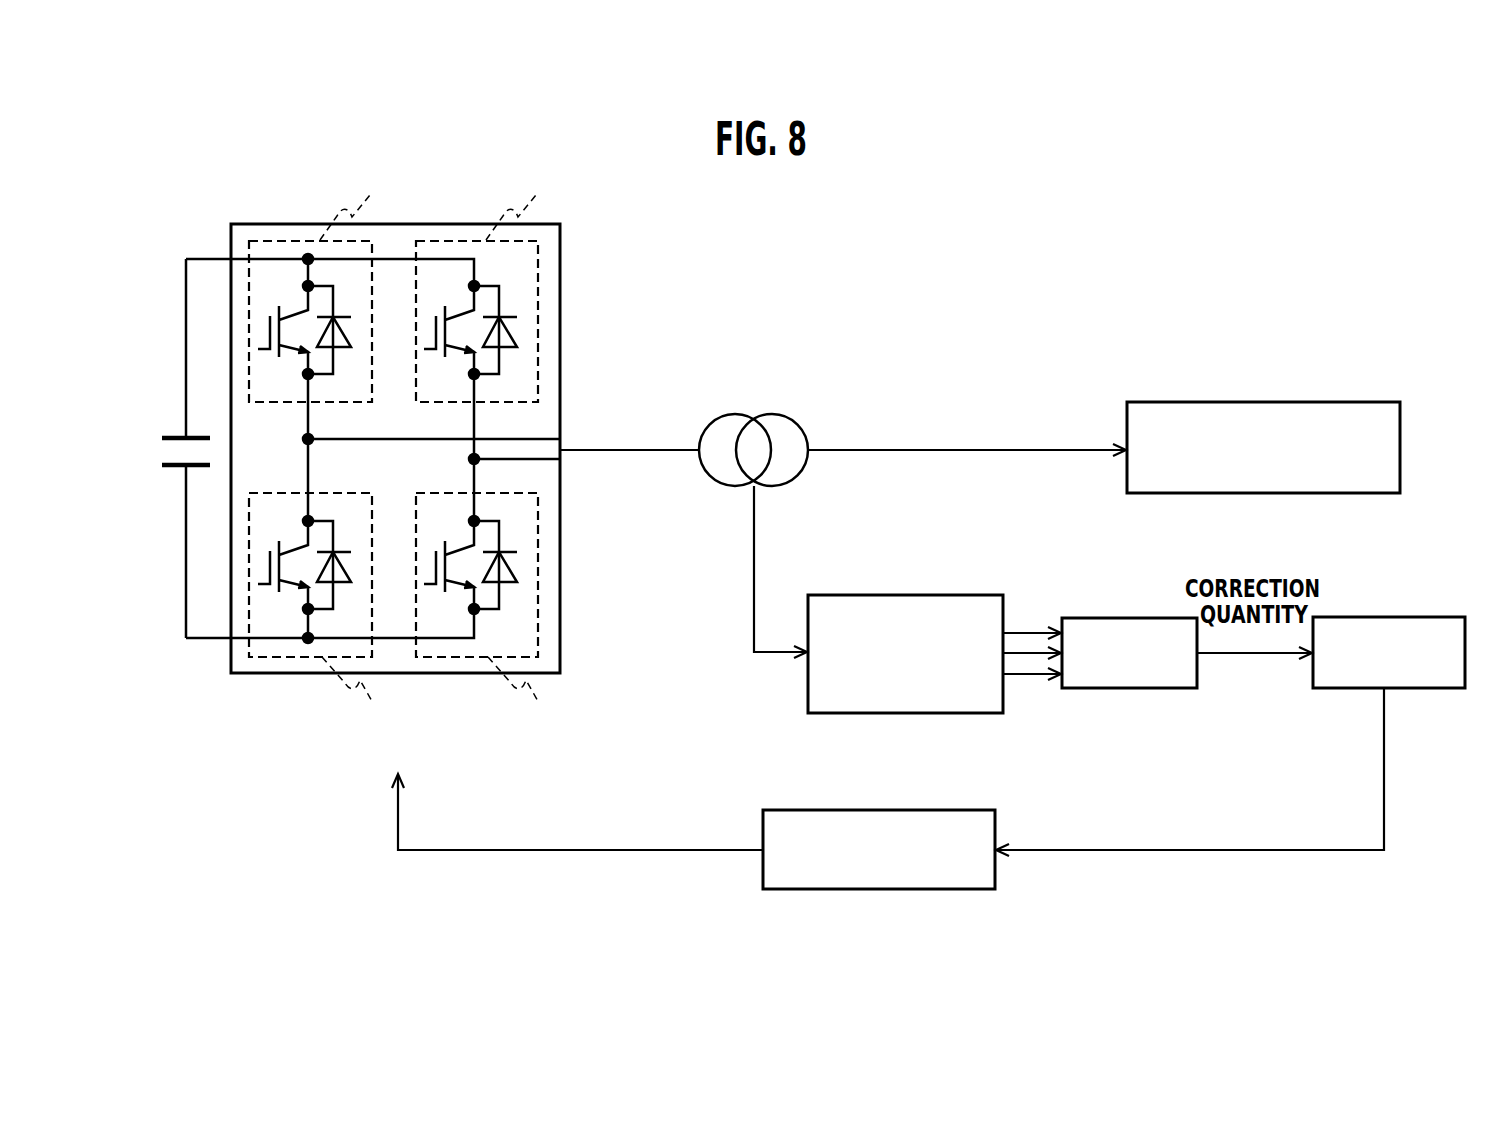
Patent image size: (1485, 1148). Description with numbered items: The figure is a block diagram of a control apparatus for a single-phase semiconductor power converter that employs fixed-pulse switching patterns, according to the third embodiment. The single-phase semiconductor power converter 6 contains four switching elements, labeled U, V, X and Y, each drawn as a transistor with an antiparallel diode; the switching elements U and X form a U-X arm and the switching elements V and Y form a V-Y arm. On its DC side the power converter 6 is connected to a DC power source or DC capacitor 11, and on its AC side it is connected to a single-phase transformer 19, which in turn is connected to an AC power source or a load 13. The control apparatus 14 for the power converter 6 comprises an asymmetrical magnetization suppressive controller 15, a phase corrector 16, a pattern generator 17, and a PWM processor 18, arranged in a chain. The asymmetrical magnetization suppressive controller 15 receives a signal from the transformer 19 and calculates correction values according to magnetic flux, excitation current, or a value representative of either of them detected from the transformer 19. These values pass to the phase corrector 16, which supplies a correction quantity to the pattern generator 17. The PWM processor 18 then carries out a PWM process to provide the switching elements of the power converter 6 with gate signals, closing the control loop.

The single-phase semiconductor power converter 6 is at (560, 288).
The DC capacitor 11 is at (172, 438).
The AC power source or load 13 is at (1290, 402).
The control apparatus 14 is at (1180, 770).
The asymmetrical magnetization suppressive controller 15 is at (912, 595).
The phase corrector 16 is at (1107, 617).
The pattern generator 17 is at (1392, 617).
The PWM processor 18 is at (863, 810).
The single-phase transformer 19 is at (777, 412).